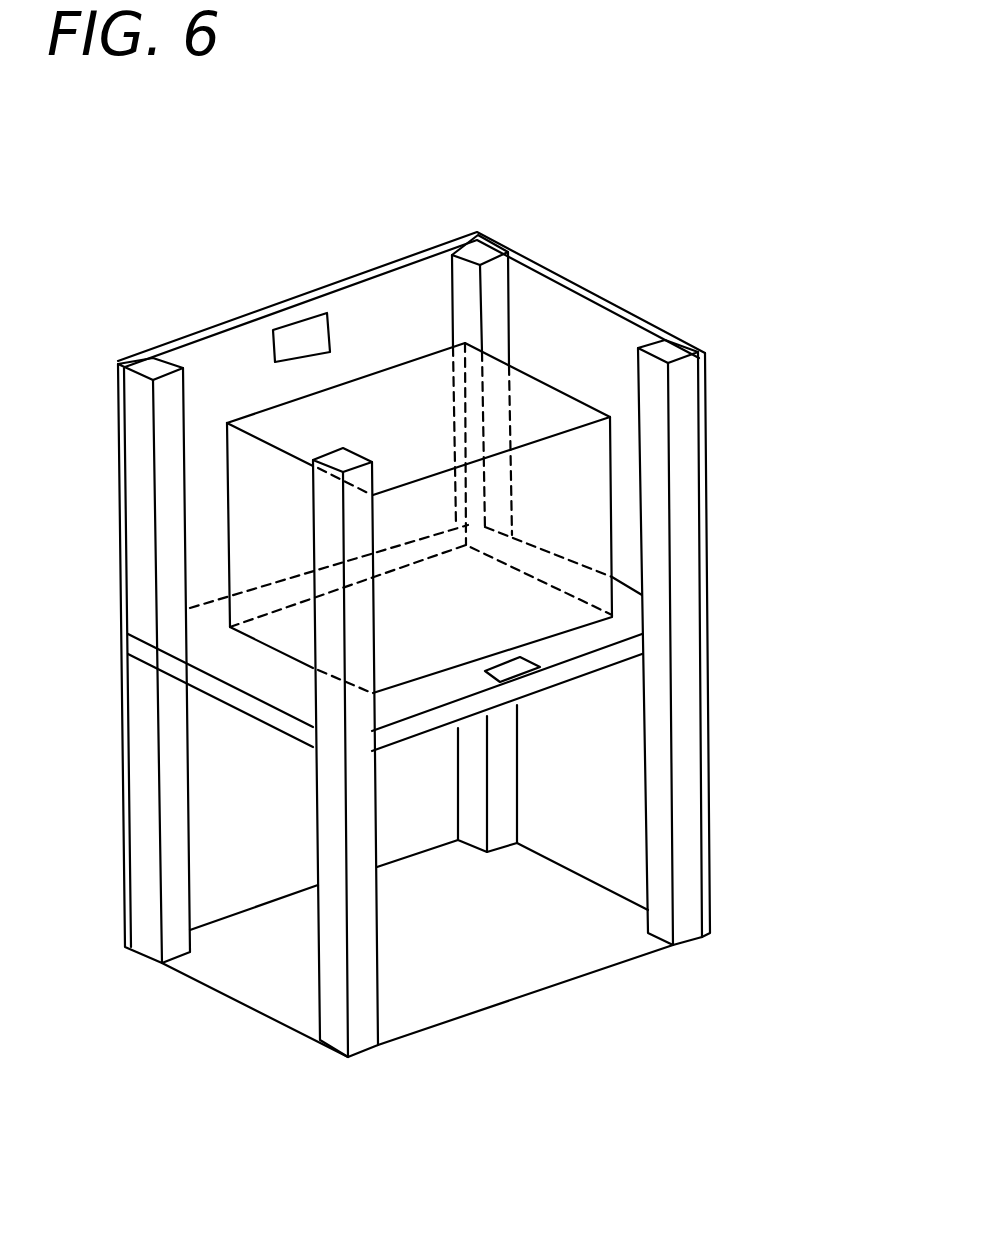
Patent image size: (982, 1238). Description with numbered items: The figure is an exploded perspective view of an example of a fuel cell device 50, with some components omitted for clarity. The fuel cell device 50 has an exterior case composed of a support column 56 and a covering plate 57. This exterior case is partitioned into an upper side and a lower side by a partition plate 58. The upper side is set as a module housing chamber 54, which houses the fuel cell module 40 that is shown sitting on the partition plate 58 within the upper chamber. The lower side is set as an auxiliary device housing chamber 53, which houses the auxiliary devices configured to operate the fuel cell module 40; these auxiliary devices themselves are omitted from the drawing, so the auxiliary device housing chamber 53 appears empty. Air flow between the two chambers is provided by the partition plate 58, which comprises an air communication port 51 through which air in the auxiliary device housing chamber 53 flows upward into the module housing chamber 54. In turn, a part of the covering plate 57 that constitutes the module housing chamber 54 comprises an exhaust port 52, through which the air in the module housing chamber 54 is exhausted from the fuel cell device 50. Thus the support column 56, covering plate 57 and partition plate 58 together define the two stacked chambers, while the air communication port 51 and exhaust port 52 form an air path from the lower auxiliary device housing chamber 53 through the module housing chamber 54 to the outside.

The fuel cell module 40 is at (545, 402).
The fuel cell device 50 is at (198, 129).
The air communication port 51 is at (550, 668).
The exhaust port 52 is at (293, 333).
The auxiliary device housing chamber 53 is at (233, 810).
The module housing chamber 54 is at (553, 325).
The support column 56 is at (155, 360).
The covering plate 57 is at (532, 262).
The partition plate 58 is at (687, 637).